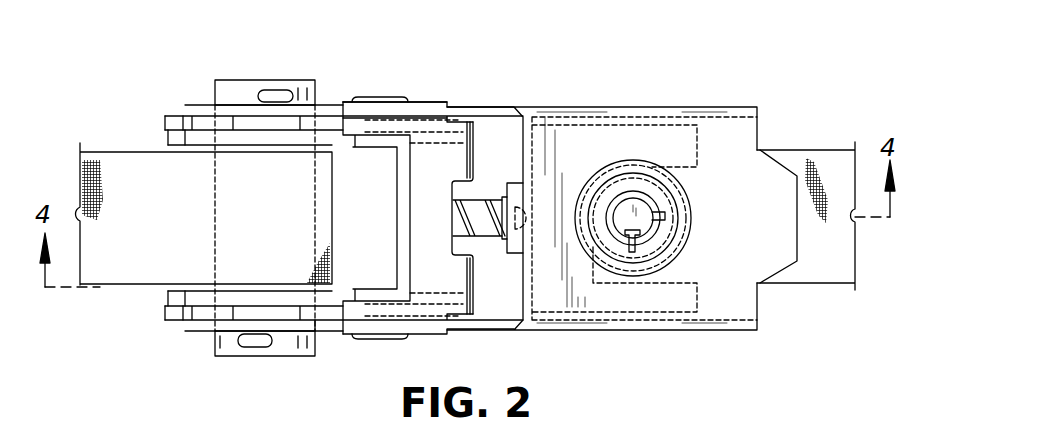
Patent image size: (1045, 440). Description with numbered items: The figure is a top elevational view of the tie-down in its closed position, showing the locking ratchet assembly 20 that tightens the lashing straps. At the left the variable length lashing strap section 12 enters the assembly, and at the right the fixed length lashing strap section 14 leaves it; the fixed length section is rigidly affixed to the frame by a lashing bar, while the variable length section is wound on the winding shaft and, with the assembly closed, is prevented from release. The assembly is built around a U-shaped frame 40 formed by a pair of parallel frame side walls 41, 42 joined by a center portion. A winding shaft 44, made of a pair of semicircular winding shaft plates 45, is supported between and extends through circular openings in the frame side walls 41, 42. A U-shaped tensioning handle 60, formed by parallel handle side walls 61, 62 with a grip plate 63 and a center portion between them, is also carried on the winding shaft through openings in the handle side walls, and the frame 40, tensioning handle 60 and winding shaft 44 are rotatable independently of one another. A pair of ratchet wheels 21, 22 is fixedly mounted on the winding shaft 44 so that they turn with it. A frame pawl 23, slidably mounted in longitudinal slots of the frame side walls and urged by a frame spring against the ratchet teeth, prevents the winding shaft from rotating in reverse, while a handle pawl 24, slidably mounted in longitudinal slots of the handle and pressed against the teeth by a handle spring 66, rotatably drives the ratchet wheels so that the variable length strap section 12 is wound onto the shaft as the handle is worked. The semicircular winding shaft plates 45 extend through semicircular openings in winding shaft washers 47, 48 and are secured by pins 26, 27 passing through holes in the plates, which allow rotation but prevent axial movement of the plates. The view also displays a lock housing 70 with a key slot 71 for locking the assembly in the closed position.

The variable length lashing strap section 12 is at (118, 178).
The fixed length lashing strap section 14 is at (828, 255).
The locking ratchet assembly 20 is at (388, 80).
The ratchet wheel 21 is at (168, 116).
The ratchet wheel 22 is at (170, 320).
The frame pawl 23 is at (367, 340).
The handle pawl 24 is at (420, 102).
The pin 26 is at (283, 92).
The pin 27 is at (248, 347).
The U-shaped frame 40 is at (185, 146).
The frame side wall 41 is at (168, 137).
The frame side wall 42 is at (170, 299).
The winding shaft 44 is at (165, 289).
The semicircular winding shaft plate 45 is at (235, 90).
The winding shaft washer 47 is at (205, 104).
The winding shaft washer 48 is at (322, 335).
The U-shaped tensioning handle 60 is at (720, 98).
The handle side wall 61 is at (310, 110).
The handle side wall 62 is at (202, 332).
The grip plate 63 is at (785, 252).
The handle spring 66 is at (495, 213).
The lock housing 70 is at (677, 193).
The key slot 71 is at (665, 217).